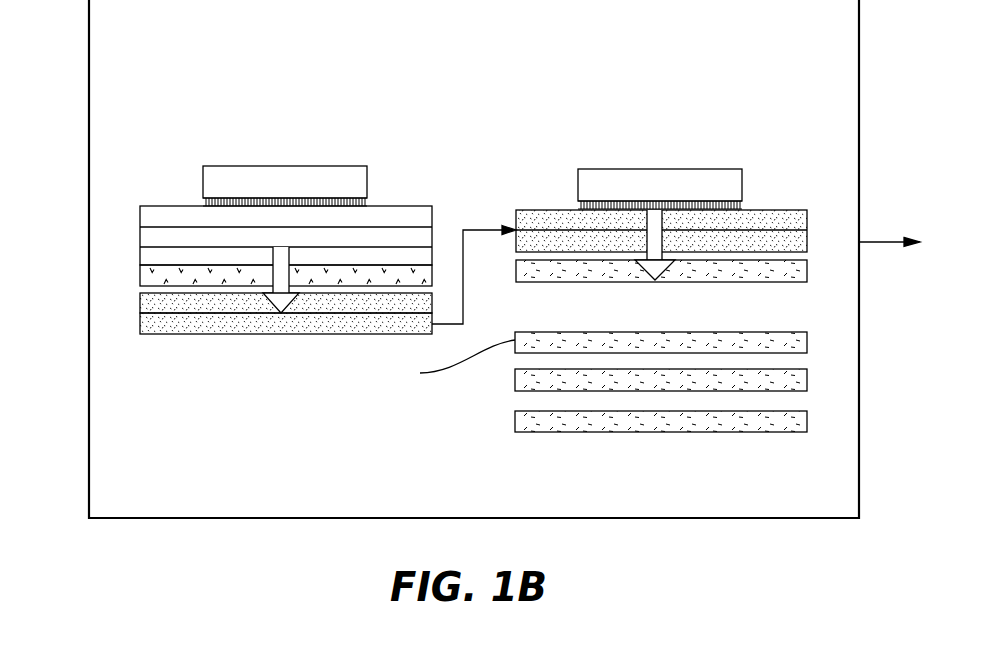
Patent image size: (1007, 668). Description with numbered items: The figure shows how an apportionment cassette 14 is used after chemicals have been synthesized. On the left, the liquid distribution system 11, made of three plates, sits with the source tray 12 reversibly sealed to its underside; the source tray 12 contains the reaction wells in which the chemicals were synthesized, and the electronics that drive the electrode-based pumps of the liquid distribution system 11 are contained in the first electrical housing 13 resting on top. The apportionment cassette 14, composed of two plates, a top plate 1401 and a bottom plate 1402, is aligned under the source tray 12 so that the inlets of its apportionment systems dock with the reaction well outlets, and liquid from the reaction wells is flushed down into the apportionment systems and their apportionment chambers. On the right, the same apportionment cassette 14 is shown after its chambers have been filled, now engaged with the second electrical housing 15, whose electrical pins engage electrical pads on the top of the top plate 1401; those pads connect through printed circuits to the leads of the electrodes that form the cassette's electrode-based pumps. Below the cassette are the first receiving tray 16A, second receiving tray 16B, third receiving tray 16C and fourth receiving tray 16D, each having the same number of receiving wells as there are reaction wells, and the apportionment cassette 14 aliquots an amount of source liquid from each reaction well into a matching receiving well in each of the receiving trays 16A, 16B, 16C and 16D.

The liquid distribution system 11 is at (134, 208).
The source tray 12 is at (140, 275).
The first electrical housing 13 is at (367, 188).
The apportionment cassette 14 is at (779, 210).
The top plate 1401 is at (140, 302).
The bottom plate 1402 is at (140, 325).
The second electrical housing 15 is at (628, 169).
The first receiving tray 16A is at (808, 275).
The second receiving tray 16B is at (808, 343).
The third receiving tray 16C is at (808, 385).
The fourth receiving tray 16D is at (808, 425).